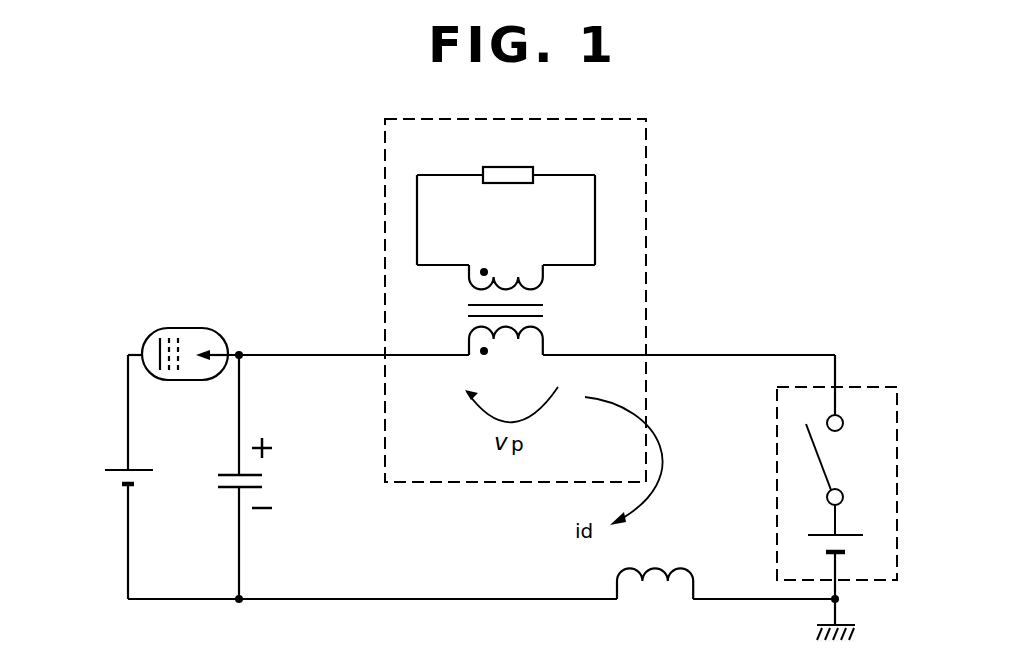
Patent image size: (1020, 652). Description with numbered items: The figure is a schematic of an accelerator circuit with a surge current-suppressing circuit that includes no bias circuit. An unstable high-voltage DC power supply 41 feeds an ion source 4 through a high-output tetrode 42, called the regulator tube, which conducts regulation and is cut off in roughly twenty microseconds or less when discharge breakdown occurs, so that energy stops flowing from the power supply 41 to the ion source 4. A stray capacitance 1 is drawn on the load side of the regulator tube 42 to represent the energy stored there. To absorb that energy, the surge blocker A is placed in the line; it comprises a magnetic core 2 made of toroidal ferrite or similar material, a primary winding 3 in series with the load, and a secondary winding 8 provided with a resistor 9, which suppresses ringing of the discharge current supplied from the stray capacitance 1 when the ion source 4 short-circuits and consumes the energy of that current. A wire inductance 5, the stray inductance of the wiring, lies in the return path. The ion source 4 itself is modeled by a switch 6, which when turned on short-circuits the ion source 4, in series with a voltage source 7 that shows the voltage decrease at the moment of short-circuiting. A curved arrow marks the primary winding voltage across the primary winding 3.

The stray capacitance 1 is at (262, 473).
The magnetic core 2 is at (489, 310).
The primary winding 3 is at (506, 361).
The ion source 4 is at (777, 463).
The wire inductance 5 is at (655, 565).
The switch 6 is at (841, 472).
The voltage source 7 is at (842, 567).
The secondary winding 8 is at (506, 260).
The resistor 9 is at (506, 198).
The high-voltage DC power supply 41 is at (110, 460).
The high-output tetrode 42 is at (185, 336).
The surge blocker A is at (647, 190).